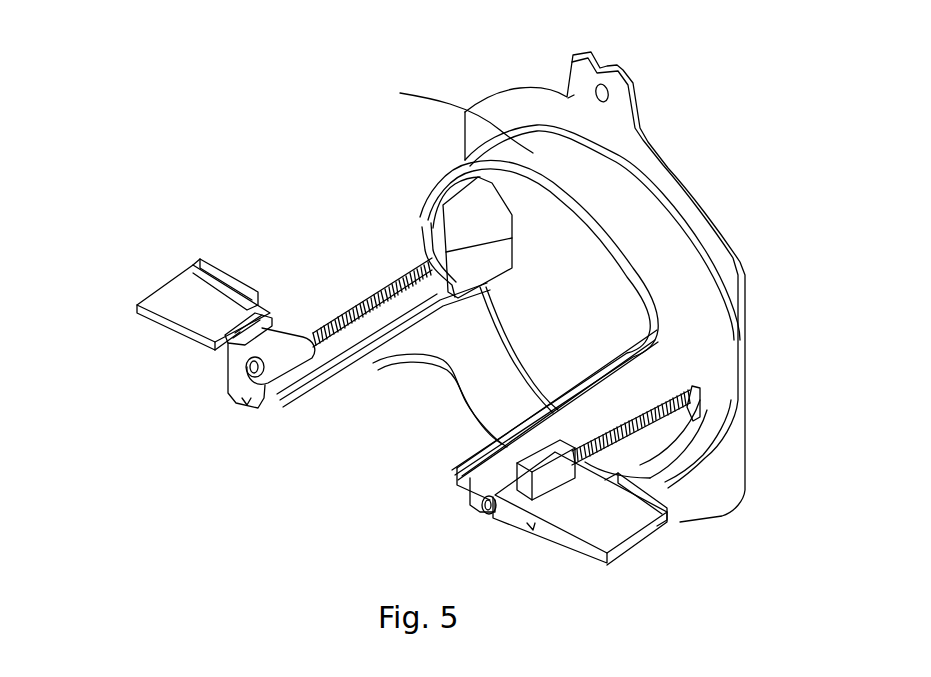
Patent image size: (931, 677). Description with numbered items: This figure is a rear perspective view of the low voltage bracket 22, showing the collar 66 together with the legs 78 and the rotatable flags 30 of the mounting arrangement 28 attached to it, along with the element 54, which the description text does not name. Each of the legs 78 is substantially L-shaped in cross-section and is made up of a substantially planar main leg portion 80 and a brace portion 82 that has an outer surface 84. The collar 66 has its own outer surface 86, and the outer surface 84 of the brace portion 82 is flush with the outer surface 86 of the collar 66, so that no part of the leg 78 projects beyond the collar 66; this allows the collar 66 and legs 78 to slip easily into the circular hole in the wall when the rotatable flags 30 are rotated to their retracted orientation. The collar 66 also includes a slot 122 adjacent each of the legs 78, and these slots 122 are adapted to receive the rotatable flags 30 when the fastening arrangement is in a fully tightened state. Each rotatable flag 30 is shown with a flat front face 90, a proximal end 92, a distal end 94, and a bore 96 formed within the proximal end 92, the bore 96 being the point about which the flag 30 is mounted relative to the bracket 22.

The low voltage bracket 22 is at (191, 128).
The mounting arrangement 28 is at (142, 258).
The rotatable flags 30 is at (395, 390).
The housing 54 is at (662, 178).
The collar 66 is at (448, 119).
The legs 78 is at (245, 398).
The main leg portion 80 is at (313, 368).
The brace portion 82 is at (374, 362).
The outer surface 84 is at (510, 368).
The outer surface 86 is at (580, 300).
The flat front face 90 is at (246, 256).
The proximal end 92 is at (285, 375).
The distal end 94 is at (162, 297).
The bore 96 is at (252, 380).
The slot 122 is at (427, 251).